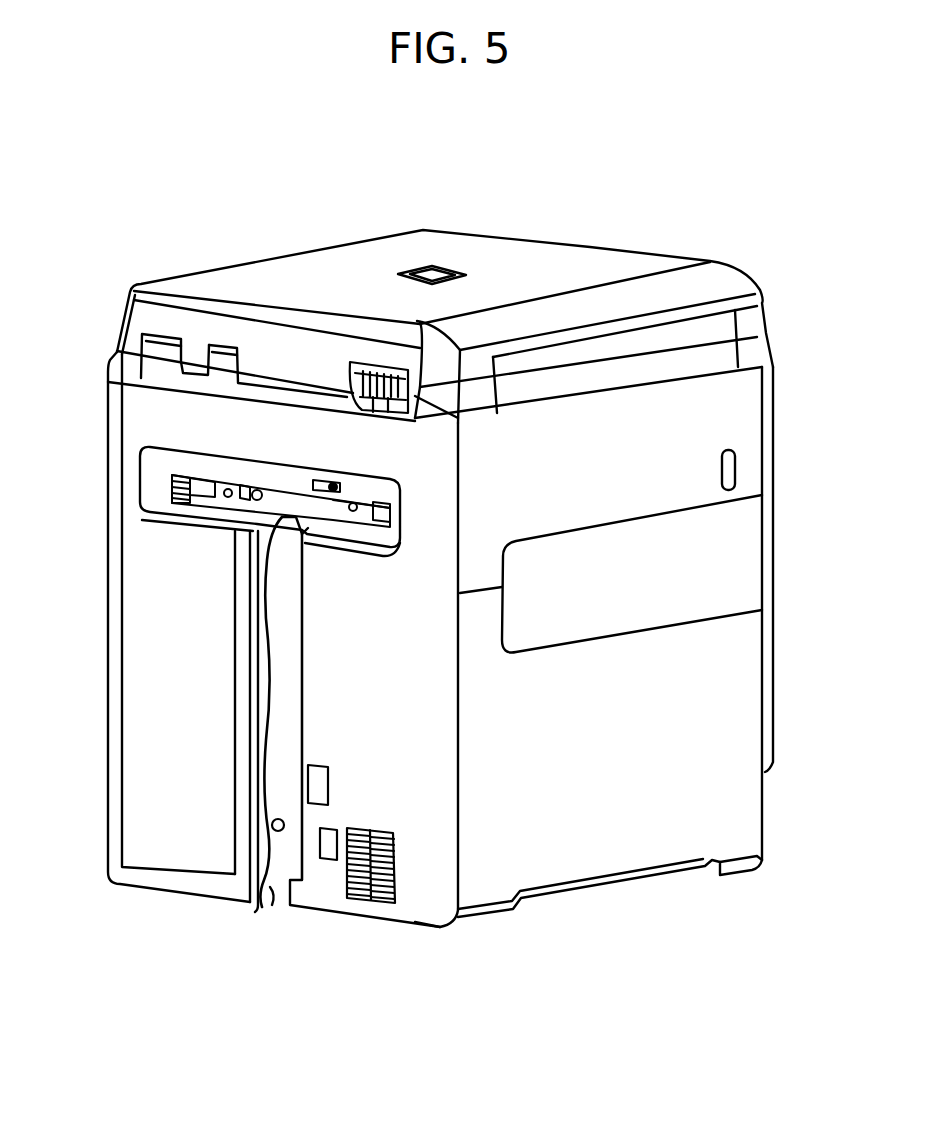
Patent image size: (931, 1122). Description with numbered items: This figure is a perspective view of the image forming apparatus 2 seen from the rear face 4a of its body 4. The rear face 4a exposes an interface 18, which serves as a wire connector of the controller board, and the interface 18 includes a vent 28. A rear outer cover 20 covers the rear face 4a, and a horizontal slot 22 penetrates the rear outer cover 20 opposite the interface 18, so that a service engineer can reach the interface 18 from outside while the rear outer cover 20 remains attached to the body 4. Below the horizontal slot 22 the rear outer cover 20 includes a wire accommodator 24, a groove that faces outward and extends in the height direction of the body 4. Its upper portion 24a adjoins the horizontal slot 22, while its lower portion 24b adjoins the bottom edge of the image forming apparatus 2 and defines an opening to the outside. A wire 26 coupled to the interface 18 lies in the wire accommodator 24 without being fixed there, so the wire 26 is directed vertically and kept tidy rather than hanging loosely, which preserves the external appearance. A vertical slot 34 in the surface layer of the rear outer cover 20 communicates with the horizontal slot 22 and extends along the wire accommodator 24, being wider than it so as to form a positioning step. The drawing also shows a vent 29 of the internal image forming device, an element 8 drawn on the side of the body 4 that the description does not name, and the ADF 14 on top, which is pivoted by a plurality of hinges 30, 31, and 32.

The image forming apparatus 2 is at (669, 170).
The body 4 is at (800, 365).
The rear face 4a is at (282, 670).
The door 8 is at (633, 620).
The ADF 14 is at (285, 254).
The interface 18 is at (232, 476).
The rear outer cover 20 is at (140, 670).
The horizontal slot 22 is at (142, 478).
The wire accommodator 24 is at (287, 713).
The upper portion 24a is at (277, 552).
The lower portion 24b is at (277, 884).
The wire 26 is at (273, 626).
The vent 28 is at (184, 473).
The vent 29 is at (383, 903).
The hinge 30 is at (172, 336).
The hinge 31 is at (230, 335).
The hinge 32 is at (386, 363).
The vertical slot 34 is at (235, 767).